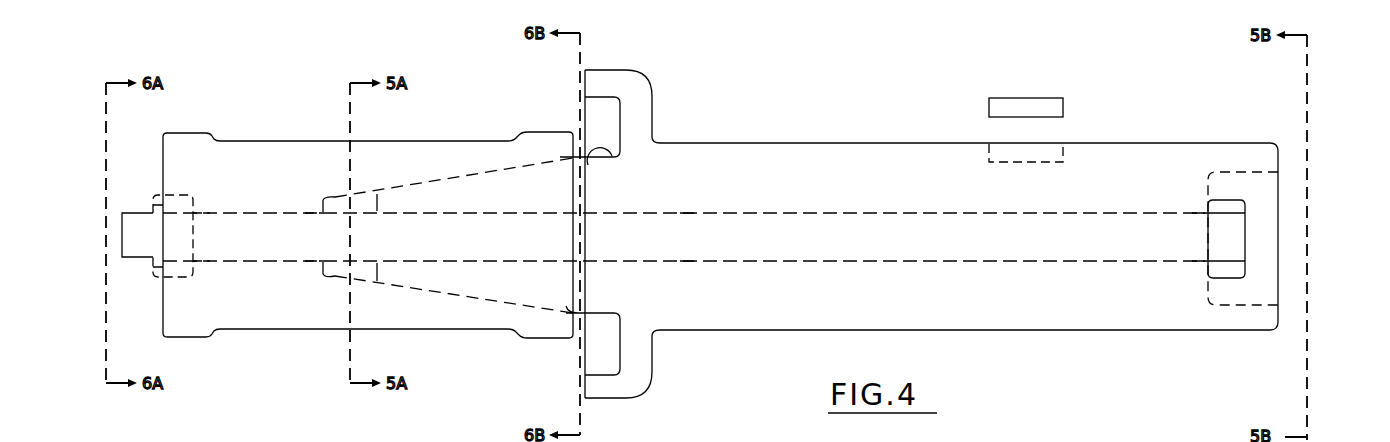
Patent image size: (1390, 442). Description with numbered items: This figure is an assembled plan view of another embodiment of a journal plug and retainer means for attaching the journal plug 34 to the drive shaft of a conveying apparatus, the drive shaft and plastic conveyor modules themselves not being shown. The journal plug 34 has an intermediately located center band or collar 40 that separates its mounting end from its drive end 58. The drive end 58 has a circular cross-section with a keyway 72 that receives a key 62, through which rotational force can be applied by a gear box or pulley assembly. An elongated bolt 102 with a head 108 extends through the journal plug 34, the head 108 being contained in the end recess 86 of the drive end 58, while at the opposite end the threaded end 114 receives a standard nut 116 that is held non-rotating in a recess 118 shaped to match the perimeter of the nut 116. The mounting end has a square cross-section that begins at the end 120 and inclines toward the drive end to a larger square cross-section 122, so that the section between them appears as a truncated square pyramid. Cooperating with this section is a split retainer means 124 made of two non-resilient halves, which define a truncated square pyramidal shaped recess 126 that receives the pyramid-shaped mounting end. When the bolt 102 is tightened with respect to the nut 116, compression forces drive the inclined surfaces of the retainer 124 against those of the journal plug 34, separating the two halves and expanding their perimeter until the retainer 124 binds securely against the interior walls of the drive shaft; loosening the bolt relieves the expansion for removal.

The journal plug 34 is at (923, 93).
The center band or collar 40 is at (640, 82).
The drive end 58 is at (765, 305).
The key 62 is at (1055, 103).
The keyway 72 is at (1050, 155).
The end recess 86 is at (1267, 204).
The elongated bolt 102 is at (798, 235).
The head 108 is at (1232, 238).
The threaded end 114 is at (137, 228).
The nut 116 is at (155, 263).
The recess 118 is at (165, 196).
The end 120 is at (375, 199).
The square cross-section 122 is at (591, 160).
The split retainer means 124 is at (267, 308).
The truncated square pyramidal shaped recess 126 is at (341, 197).